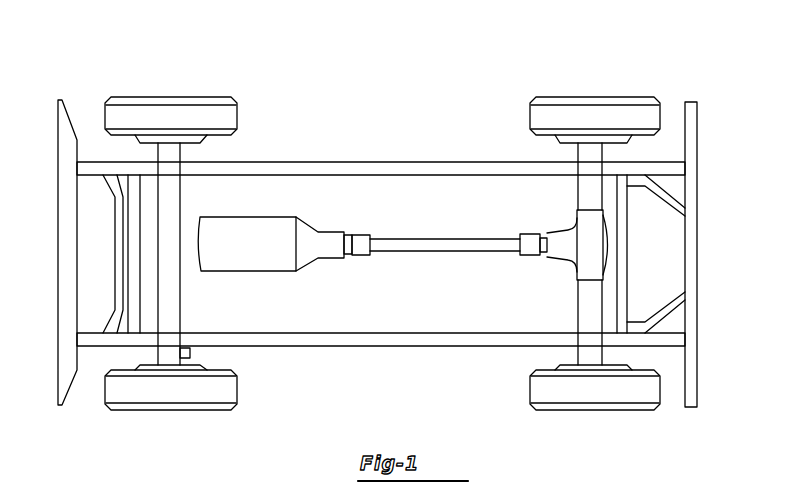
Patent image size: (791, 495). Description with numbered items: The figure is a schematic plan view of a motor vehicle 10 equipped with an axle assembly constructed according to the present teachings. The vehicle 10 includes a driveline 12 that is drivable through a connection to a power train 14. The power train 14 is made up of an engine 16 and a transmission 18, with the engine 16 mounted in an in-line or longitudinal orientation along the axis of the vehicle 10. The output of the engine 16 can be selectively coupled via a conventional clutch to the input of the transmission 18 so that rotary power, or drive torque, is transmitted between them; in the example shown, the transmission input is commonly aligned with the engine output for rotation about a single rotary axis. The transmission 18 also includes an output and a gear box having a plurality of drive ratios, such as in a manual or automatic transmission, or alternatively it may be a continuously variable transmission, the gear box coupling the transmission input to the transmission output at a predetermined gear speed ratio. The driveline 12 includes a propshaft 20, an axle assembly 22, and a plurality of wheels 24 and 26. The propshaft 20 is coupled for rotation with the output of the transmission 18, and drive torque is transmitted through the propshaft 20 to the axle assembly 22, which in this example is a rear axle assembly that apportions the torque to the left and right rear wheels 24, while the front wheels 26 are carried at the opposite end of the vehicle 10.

The vehicle 10 is at (452, 56).
The driveline 12 is at (535, 223).
The power train 14 is at (275, 257).
The engine 16 is at (253, 253).
The transmission 18 is at (331, 232).
The propshaft 20 is at (438, 238).
The axle assembly 22 is at (553, 272).
The rear wheels 24 is at (567, 97).
The wheels 26 is at (161, 97).